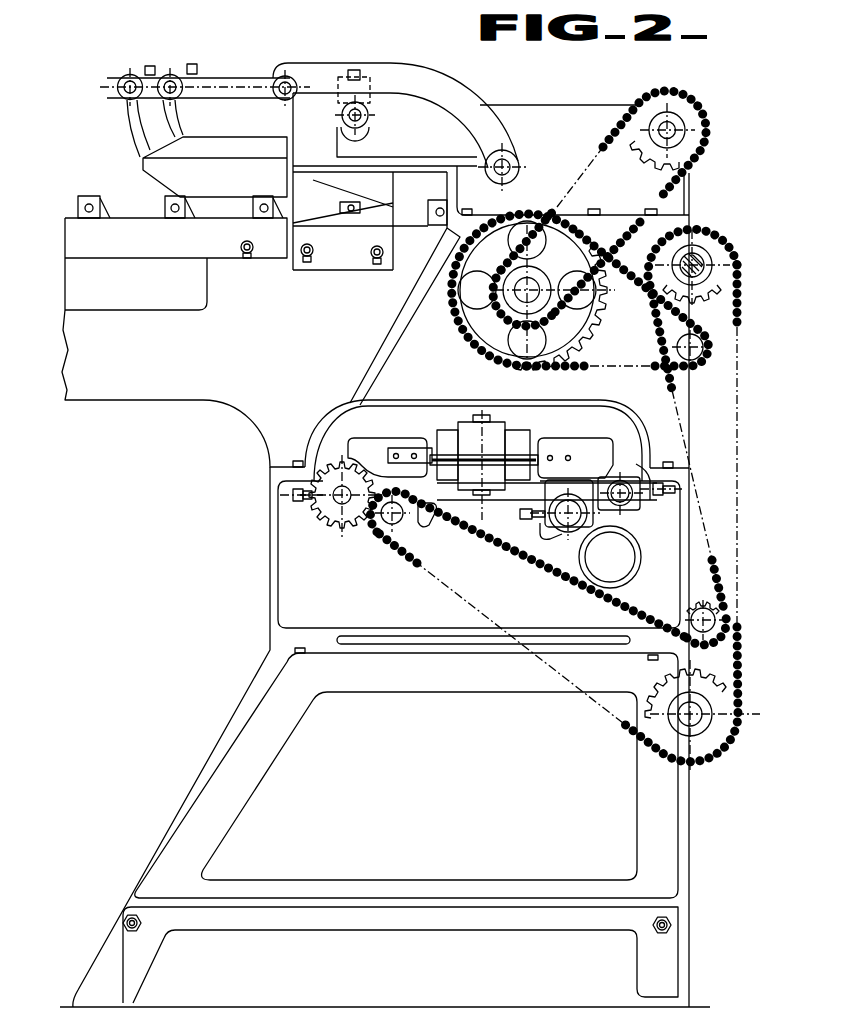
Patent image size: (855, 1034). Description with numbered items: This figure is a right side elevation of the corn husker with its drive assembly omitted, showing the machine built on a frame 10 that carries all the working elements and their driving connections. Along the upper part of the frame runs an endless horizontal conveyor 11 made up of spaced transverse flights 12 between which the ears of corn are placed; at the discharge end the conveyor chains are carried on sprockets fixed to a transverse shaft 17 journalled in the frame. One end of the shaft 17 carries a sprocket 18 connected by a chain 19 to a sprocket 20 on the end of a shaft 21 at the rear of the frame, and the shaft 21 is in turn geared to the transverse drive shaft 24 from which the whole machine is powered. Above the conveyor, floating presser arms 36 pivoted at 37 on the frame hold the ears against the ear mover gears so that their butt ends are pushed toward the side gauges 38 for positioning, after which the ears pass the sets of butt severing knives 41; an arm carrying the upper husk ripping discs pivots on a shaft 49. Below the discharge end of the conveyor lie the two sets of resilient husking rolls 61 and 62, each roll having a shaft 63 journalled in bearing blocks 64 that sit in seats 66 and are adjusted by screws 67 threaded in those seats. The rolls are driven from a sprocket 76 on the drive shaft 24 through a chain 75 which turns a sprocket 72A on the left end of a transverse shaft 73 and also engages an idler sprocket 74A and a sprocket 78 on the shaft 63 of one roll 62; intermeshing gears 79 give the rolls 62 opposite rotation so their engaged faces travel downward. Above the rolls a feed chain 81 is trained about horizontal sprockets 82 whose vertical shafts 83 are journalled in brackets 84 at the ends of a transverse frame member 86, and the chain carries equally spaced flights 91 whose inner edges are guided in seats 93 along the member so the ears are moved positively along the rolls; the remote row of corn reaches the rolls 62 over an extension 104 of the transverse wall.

The frame 10 is at (270, 591).
The endless horizontal conveyor 11 is at (95, 194).
The flights 12 is at (165, 208).
The transverse shaft 17 is at (538, 282).
The sprocket 18 is at (458, 318).
The chain 19 is at (575, 368).
The sprocket 20 is at (657, 329).
The shaft 21 is at (702, 356).
The transverse drive shaft 24 is at (703, 262).
The floating presser arms 36 is at (177, 125).
The pivot 37 is at (362, 123).
The gauges 38 is at (157, 190).
The butt severing knives 41 is at (318, 226).
The shaft 49 is at (690, 131).
The husking rolls 61 is at (603, 520).
The husking rolls 62 is at (358, 526).
The shaft 63 is at (338, 492).
The bearing blocks 64 is at (556, 527).
The seats 66 is at (540, 530).
The adjusting screws 67 is at (292, 496).
The sprocket 72A is at (740, 683).
The transverse shaft 73 is at (695, 713).
The idler sprocket 74A is at (690, 614).
The chain 75 is at (708, 222).
The sprocket 76 is at (727, 274).
The sprocket 78 is at (393, 528).
The intermeshing gears 79 is at (329, 514).
The chain 81 is at (440, 455).
The sprockets 82 is at (492, 445).
The shafts 83 is at (474, 416).
The brackets 84 is at (460, 422).
The frame member 86 is at (530, 438).
The flights 91 is at (381, 441).
The seats 93 is at (538, 486).
The extension 104 is at (440, 400).